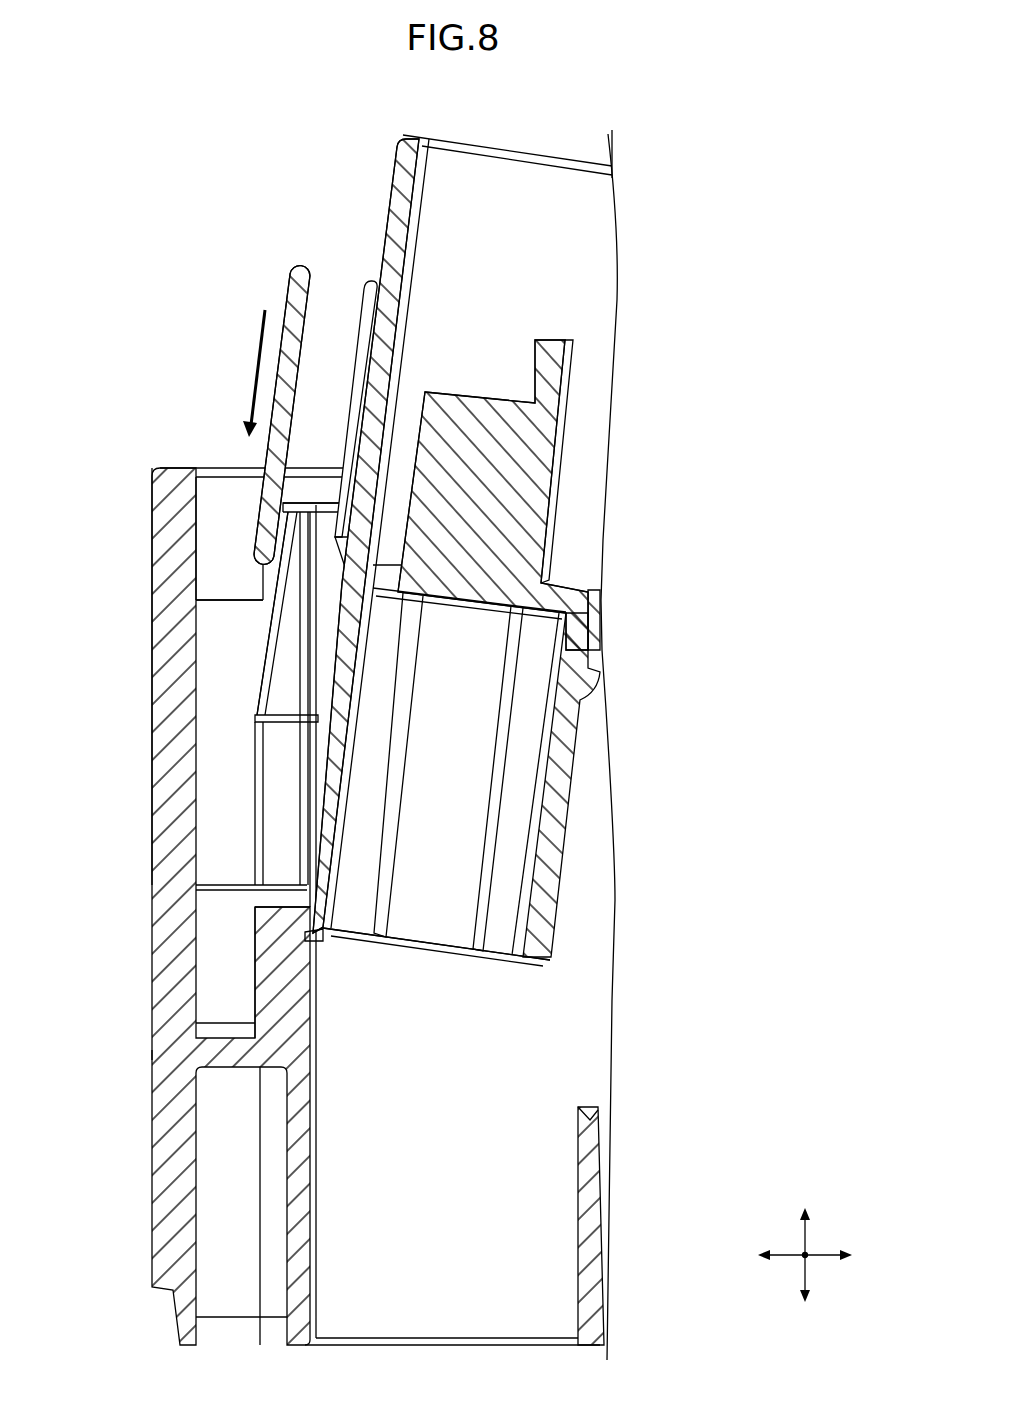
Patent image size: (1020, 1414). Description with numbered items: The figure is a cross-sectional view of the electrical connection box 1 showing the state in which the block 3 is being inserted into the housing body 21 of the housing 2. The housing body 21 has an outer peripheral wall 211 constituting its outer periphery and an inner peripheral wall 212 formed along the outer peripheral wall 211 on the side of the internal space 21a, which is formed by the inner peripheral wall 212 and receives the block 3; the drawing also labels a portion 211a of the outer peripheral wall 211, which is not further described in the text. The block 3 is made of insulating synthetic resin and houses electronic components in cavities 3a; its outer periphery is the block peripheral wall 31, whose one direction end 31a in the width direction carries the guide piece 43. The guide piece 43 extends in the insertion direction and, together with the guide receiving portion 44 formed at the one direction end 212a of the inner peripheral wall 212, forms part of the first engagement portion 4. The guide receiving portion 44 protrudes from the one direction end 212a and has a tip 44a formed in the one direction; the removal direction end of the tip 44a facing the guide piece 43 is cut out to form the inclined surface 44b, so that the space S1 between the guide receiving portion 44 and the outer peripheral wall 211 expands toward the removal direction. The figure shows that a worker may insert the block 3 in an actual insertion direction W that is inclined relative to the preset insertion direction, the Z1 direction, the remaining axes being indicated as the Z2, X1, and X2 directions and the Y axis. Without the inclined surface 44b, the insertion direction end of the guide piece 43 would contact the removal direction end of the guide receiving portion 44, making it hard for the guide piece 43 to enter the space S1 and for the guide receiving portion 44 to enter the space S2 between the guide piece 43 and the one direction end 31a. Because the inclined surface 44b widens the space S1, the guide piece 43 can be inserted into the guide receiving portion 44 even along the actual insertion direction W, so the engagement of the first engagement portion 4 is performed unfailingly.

The electrical connection box 1 is at (148, 416).
The housing 2 is at (100, 1055).
The housing body 21 is at (333, 878).
The internal space 21a is at (228, 497).
The outer peripheral wall 211 is at (150, 605).
The inner surface of side wall portion 211a is at (162, 553).
The inner peripheral wall 212 is at (265, 965).
The one direction end of the inner peripheral wall 212a is at (272, 997).
The block 3 is at (452, 587).
The cavity 3a is at (418, 940).
The block peripheral wall 31 is at (474, 724).
The one direction end of the block peripheral wall 31a is at (418, 234).
The first engagement portion 4 is at (208, 525).
The guide piece 43 is at (298, 288).
The guide receiving portion 44 is at (203, 696).
The tip 44a is at (282, 694).
The inclined surface 44b is at (262, 627).
The space S1 is at (210, 675).
The space S2 is at (335, 290).
The actual insertion direction W is at (256, 332).
The Y axis Y is at (810, 1250).
The X1 direction X1 is at (766, 1255).
The X2 direction X2 is at (845, 1255).
The Z1 direction Z1 is at (804, 1293).
The Z2 direction Z2 is at (804, 1218).